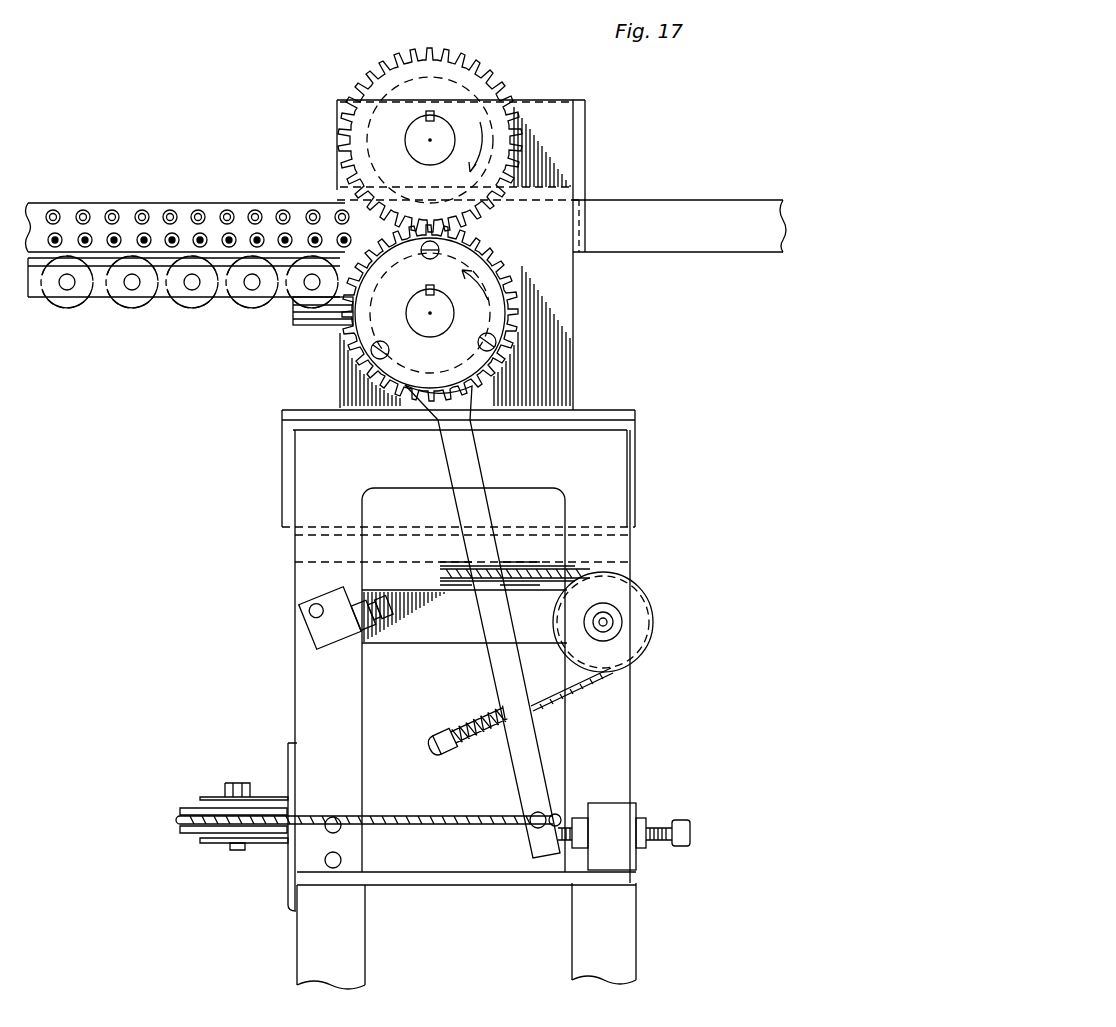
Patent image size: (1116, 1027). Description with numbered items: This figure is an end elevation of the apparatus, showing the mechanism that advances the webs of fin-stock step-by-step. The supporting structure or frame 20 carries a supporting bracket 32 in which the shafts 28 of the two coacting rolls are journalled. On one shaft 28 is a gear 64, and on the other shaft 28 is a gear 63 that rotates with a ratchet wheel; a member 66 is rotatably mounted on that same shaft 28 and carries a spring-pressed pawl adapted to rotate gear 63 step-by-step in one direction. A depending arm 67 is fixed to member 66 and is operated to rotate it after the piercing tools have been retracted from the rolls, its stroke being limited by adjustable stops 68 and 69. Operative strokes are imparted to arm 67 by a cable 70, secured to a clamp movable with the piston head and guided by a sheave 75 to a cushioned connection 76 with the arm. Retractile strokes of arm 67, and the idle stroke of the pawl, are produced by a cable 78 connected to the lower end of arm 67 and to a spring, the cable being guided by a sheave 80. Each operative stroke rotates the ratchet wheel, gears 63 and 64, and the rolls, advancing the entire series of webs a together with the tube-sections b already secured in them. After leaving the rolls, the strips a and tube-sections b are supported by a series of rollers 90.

The frame 20 is at (598, 405).
The shaft 28 is at (416, 142).
The supporting bracket 32 is at (565, 275).
The gear 63 is at (485, 253).
The gear 64 is at (492, 72).
The member 66 is at (493, 305).
The depending arm 67 is at (470, 460).
The adjustable stop 68 is at (373, 645).
The adjustable stop 69 is at (575, 830).
The cable 70 is at (588, 683).
The sheave 75 is at (638, 640).
The cushioned connection 76 is at (485, 725).
The cable 78 is at (420, 828).
The sheave 80 is at (190, 808).
The rollers 90 is at (135, 308).
The webs of fin-stock a is at (155, 205).
The tube-sections b is at (230, 232).